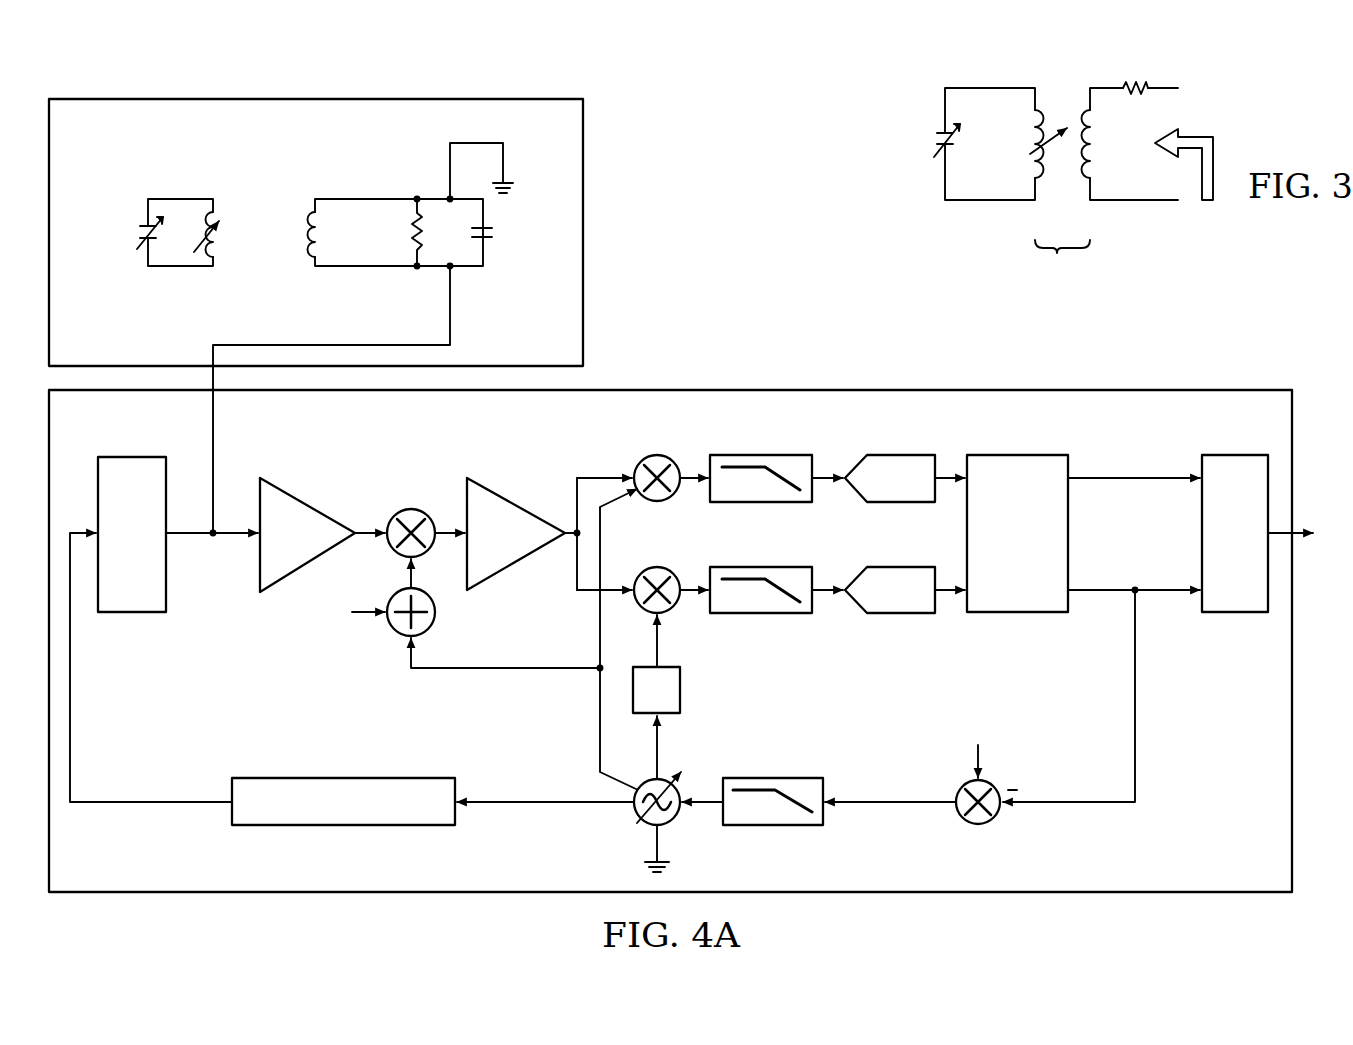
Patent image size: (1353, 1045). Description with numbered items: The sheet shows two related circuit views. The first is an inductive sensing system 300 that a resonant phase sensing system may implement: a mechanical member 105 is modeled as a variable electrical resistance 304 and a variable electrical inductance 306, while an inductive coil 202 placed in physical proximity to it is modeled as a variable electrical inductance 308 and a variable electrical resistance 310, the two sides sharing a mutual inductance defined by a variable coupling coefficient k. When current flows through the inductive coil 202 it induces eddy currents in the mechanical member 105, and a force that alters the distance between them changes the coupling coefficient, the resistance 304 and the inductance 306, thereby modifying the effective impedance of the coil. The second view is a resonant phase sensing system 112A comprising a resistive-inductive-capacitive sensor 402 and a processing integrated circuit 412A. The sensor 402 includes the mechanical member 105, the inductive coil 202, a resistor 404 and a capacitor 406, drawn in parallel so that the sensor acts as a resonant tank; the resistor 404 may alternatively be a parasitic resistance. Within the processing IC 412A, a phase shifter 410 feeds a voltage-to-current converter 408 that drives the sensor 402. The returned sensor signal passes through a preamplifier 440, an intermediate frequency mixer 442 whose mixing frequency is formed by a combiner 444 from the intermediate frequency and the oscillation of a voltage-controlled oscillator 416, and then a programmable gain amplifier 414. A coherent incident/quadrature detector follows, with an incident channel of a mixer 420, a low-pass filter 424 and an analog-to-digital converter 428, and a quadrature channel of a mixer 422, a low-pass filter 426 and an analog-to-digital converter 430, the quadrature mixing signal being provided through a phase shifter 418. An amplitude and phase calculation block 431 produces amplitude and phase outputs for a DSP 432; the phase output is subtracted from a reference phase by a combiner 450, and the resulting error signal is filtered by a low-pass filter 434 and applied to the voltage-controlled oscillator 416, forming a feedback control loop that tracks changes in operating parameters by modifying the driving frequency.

In FIG. 3, the inductive sensing system 300 is at (1258, 106).
In FIG. 3, the variable electrical resistance 304 is at (943, 140).
In FIG. 4A, the variable electrical resistance 304 is at (146, 231).
In FIG. 3, the variable electrical inductance 306 is at (1039, 110).
In FIG. 4A, the variable electrical inductance 306 is at (208, 277).
In FIG. 3, the variable electrical inductance 308 is at (1040, 181).
In FIG. 3, the variable electrical resistance 310 is at (1135, 86).
In FIG. 3, the mechanical member 105 is at (945, 208).
In FIG. 4A, the mechanical member 105 is at (148, 277).
In FIG. 3, the inductive coil 202 is at (1090, 208).
In FIG. 4A, the inductive coil 202 is at (302, 218).
In FIG. 4A, the resistive-inductive-capacitive sensor 402 is at (204, 97).
In FIG. 4A, the resistor 404 is at (408, 231).
In FIG. 4A, the capacitor 406 is at (493, 231).
In FIG. 4A, the resonant phase sensing system 112A is at (663, 337).
In FIG. 4A, the processing integrated circuit 412A is at (839, 388).
In FIG. 4A, the voltage-to-current converter 408 is at (133, 456).
In FIG. 4A, the preamplifier 440 is at (305, 500).
In FIG. 4A, the intermediate frequency mixer 442 is at (421, 507).
In FIG. 4A, the combiner 444 is at (398, 633).
In FIG. 4A, the programmable gain amplifier 414 is at (515, 500).
In FIG. 4A, the mixer 420 is at (672, 500).
In FIG. 4A, the mixer 422 is at (672, 612).
In FIG. 4A, the low-pass filter 424 is at (760, 502).
In FIG. 4A, the low-pass filter 426 is at (760, 615).
In FIG. 4A, the analog-to-digital converter 428 is at (885, 505).
In FIG. 4A, the analog-to-digital converter 430 is at (885, 617).
In FIG. 4A, the amplitude and phase calculation block 431 is at (1017, 615).
In FIG. 4A, the DSP 432 is at (1218, 569).
In FIG. 4A, the phase shifter 418 is at (681, 689).
In FIG. 4A, the voltage-controlled oscillator 416 is at (672, 822).
In FIG. 4A, the low-pass filter 434 is at (772, 828).
In FIG. 4A, the phase shifter 410 is at (345, 827).
In FIG. 4A, the combiner 450 is at (995, 820).